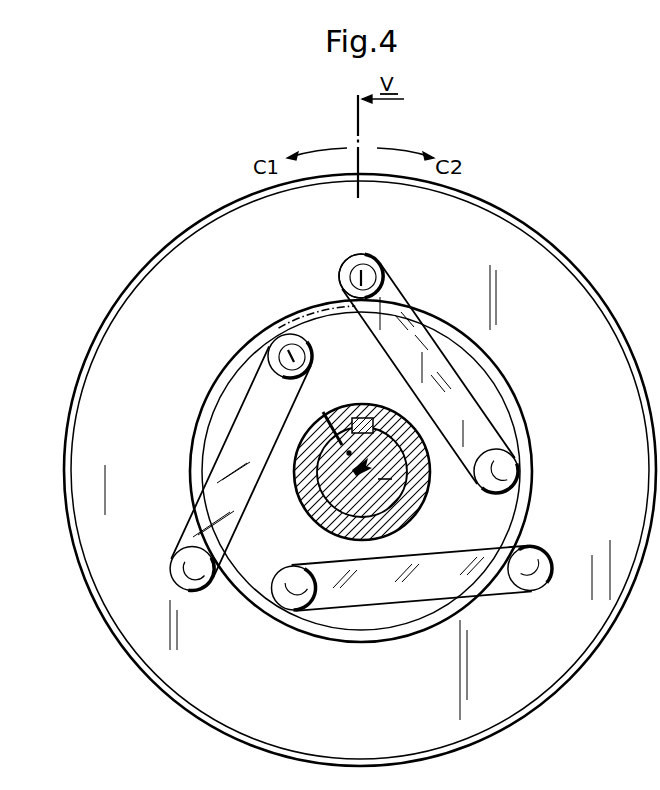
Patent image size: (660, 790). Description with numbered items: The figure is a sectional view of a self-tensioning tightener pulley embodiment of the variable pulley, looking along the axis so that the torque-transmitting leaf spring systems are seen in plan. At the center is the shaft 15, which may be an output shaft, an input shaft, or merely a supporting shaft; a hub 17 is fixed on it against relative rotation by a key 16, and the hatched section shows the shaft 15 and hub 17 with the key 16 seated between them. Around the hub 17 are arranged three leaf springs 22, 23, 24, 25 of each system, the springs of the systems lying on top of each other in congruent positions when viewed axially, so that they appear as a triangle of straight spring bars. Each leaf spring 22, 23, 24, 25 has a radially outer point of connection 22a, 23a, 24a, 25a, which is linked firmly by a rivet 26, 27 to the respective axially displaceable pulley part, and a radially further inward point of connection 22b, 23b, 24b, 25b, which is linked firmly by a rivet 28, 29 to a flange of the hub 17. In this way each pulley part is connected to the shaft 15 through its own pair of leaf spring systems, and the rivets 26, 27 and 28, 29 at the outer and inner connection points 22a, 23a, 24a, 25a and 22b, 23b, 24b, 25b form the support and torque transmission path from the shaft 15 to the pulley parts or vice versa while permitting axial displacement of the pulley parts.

The shaft 15 is at (377, 420).
The key 16 is at (352, 417).
The hub 17 is at (408, 503).
The leaf spring 22 is at (357, 493).
The leaf spring 23 is at (357, 493).
The leaf spring 24 is at (357, 493).
The leaf spring 25 is at (462, 410).
The outer point of connection 22a is at (300, 265).
The outer point of connection 23a is at (300, 265).
The outer point of connection 24a is at (300, 265).
The outer point of connection 25a is at (340, 266).
The inner point of connection 22b is at (389, 467).
The inner point of connection 23b is at (389, 467).
The inner point of connection 24b is at (389, 467).
The inner point of connection 25b is at (532, 444).
The rivet 26 is at (334, 447).
The rivet 27 is at (383, 268).
The rivet 28 is at (373, 503).
The rivet 29 is at (268, 356).